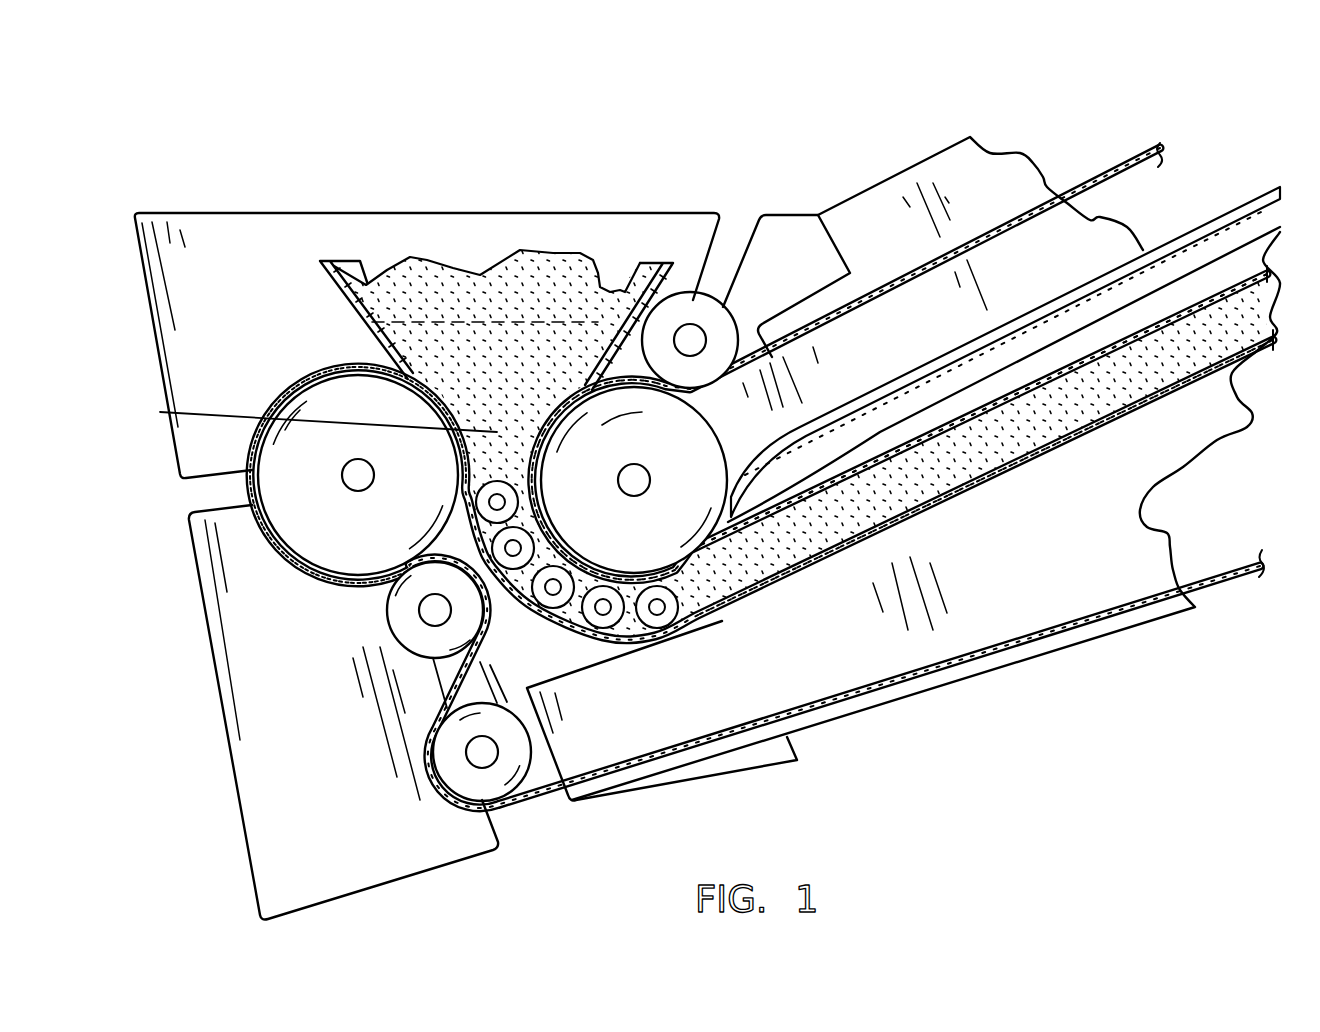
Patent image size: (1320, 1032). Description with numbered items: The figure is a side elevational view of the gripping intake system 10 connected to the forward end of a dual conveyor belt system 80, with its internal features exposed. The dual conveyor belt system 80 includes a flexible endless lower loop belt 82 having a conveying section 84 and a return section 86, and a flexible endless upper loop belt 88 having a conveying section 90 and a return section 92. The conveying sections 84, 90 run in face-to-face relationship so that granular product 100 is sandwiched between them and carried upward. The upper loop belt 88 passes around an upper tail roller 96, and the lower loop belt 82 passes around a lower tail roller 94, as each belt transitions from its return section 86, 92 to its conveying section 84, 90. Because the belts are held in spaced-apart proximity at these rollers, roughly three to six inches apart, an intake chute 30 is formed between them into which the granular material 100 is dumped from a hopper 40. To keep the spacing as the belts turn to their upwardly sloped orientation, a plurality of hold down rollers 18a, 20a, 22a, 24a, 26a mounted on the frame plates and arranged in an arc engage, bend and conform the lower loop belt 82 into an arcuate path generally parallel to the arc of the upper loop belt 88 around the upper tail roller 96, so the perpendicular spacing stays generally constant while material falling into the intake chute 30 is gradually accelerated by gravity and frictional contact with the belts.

The gripping intake system 10 is at (210, 203).
The return section 86 is at (330, 365).
The hopper 40 is at (362, 262).
The intake chute 30 is at (510, 382).
The return section 92 is at (620, 375).
The upper loop belt 88 is at (893, 287).
The conveying section 90 is at (1013, 390).
The dual conveyor belt system 80 is at (1112, 167).
The granular product 100 is at (306, 417).
The lower loop belt 82 is at (240, 447).
The lower tail roller 94 is at (287, 520).
The hold down roller 18a is at (485, 510).
The hold down roller 20a is at (498, 556).
The hold down roller 22a is at (556, 606).
The hold down roller 24a is at (607, 626).
The hold down roller 26a is at (662, 626).
The upper tail roller 96 is at (697, 550).
The conveying section 84 is at (950, 508).